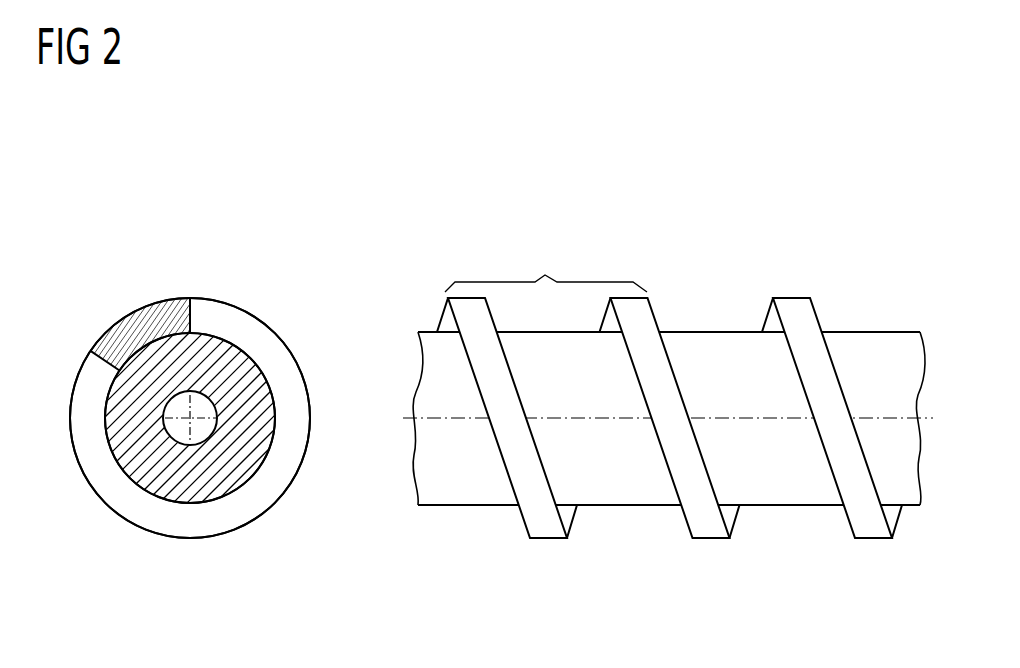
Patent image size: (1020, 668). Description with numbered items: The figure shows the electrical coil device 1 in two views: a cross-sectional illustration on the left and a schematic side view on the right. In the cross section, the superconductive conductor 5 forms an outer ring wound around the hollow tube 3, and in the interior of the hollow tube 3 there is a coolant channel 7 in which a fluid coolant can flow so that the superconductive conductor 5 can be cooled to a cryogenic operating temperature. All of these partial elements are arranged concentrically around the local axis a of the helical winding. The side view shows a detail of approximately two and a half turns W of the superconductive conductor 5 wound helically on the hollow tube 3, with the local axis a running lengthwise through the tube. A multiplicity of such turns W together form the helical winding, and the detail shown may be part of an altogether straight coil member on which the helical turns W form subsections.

The electrical coil device 1 is at (132, 238).
The hollow tube 3 is at (237, 382).
The superconductive conductor 5 is at (250, 328).
The coolant channel 7 is at (200, 408).
The local axis a is at (190, 418).
The turn W is at (546, 270).